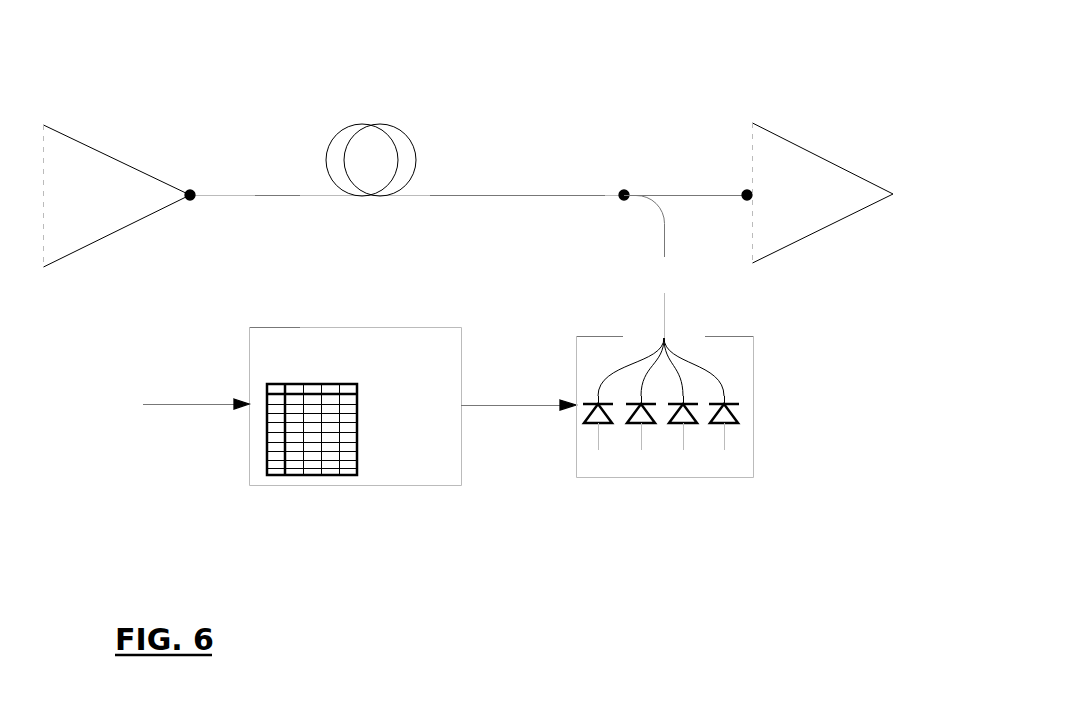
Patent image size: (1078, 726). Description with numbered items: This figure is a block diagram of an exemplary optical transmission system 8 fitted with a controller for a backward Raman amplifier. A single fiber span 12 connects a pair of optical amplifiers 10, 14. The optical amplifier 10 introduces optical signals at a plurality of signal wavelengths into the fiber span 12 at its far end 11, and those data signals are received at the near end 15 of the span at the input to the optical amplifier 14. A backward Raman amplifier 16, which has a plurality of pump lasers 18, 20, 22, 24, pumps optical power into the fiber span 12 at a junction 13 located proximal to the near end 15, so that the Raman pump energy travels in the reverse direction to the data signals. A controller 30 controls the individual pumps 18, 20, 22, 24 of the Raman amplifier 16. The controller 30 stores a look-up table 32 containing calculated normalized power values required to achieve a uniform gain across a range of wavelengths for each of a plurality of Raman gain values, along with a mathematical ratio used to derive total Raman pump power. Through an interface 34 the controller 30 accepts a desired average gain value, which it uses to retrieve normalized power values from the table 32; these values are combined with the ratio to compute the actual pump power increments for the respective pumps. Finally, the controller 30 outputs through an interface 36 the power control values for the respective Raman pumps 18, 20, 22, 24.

The optical transmission system 8 is at (682, 42).
The optical amplifier 10 is at (112, 160).
The far end 11 is at (192, 190).
The fiber span 12 is at (468, 196).
The junction 13 is at (625, 191).
The optical amplifier 14 is at (820, 157).
The near end 15 is at (744, 190).
The backward Raman amplifier 16 is at (717, 335).
The pump laser 18 is at (595, 429).
The pump laser 20 is at (638, 429).
The pump laser 22 is at (680, 429).
The pump laser 24 is at (721, 429).
The controller 30 is at (408, 327).
The look-up table 32 is at (293, 381).
The interface 34 is at (112, 368).
The interface 36 is at (543, 401).